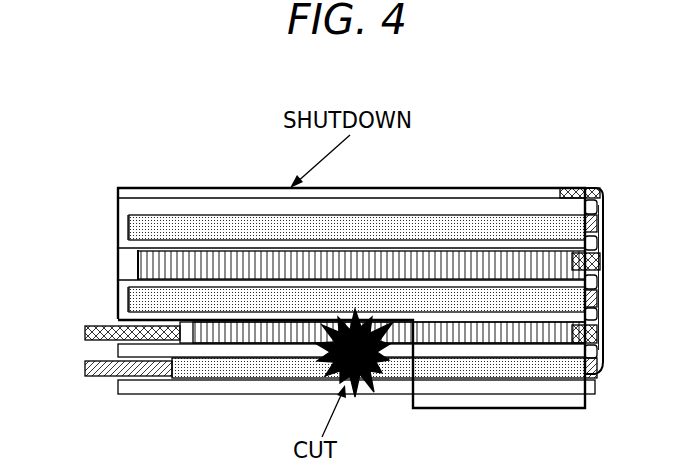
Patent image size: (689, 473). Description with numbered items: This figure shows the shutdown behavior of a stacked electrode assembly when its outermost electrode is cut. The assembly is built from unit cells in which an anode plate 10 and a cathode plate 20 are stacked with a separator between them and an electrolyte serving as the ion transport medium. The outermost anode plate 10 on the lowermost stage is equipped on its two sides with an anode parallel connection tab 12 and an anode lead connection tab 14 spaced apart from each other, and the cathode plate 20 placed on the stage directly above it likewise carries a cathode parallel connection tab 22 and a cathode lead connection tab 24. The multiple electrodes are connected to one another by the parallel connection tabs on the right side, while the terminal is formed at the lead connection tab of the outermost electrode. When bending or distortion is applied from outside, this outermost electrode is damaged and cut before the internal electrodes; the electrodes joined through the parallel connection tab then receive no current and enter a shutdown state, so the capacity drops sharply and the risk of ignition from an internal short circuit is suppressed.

The anode plate 10 is at (197, 372).
The anode parallel connection tab 12 is at (597, 365).
The anode lead connection tab 14 is at (86, 368).
The cathode plate 20 is at (195, 332).
The cathode parallel connection tab 22 is at (597, 333).
The cathode lead connection tab 24 is at (86, 331).